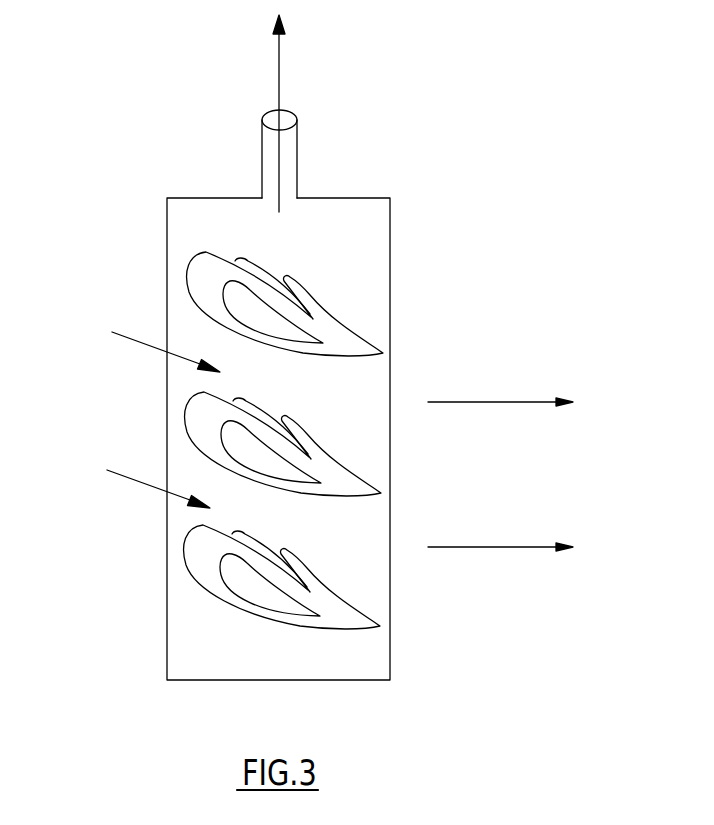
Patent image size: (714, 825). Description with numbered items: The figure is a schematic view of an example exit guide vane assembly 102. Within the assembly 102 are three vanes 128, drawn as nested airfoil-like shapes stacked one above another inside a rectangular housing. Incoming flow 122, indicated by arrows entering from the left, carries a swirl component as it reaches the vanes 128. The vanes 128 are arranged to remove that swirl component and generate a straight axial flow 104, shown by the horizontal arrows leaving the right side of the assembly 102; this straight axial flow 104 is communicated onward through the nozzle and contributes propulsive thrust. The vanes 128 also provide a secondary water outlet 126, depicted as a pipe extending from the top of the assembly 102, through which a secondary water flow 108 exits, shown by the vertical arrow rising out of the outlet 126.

The exit guide vane assembly 102 is at (378, 230).
The straight axial flow 104 is at (498, 459).
The secondary water flow 108 is at (278, 63).
The incoming flow 122 is at (142, 412).
The secondary water outlet 126 is at (288, 158).
The vanes 128 is at (190, 272).